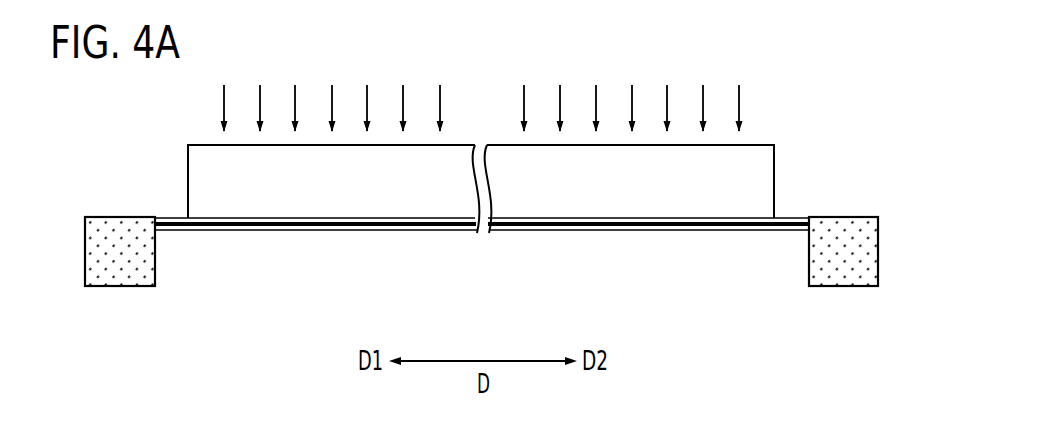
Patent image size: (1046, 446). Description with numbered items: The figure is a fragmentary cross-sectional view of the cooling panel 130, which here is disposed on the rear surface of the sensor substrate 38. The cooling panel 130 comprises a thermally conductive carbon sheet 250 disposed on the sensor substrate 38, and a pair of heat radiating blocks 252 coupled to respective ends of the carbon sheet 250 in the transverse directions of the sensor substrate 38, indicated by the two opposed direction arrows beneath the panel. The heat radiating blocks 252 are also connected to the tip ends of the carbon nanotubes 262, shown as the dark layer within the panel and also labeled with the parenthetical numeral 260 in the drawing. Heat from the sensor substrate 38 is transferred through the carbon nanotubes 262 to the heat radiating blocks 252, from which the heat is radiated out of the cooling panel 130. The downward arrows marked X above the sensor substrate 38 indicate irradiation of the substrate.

The sensor substrate 38 is at (203, 183).
The thermally conductive carbon sheet 250 is at (233, 232).
The carbon nanotubes 262 is at (482, 268).
The release layer 260 is at (540, 230).
The cooling panel 130 is at (365, 243).
The heat radiating blocks 252 is at (120, 270).
The light X is at (222, 111).